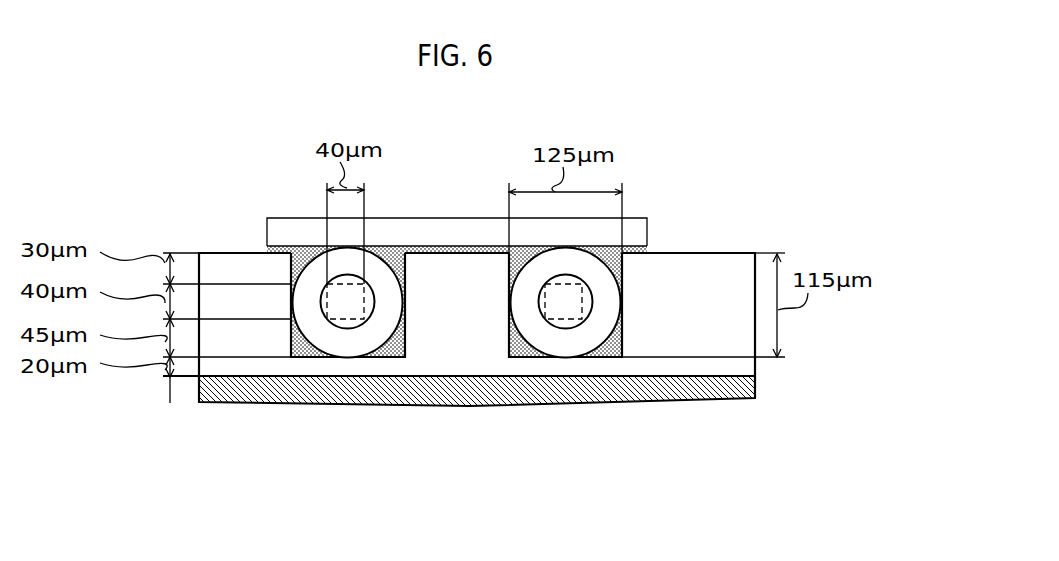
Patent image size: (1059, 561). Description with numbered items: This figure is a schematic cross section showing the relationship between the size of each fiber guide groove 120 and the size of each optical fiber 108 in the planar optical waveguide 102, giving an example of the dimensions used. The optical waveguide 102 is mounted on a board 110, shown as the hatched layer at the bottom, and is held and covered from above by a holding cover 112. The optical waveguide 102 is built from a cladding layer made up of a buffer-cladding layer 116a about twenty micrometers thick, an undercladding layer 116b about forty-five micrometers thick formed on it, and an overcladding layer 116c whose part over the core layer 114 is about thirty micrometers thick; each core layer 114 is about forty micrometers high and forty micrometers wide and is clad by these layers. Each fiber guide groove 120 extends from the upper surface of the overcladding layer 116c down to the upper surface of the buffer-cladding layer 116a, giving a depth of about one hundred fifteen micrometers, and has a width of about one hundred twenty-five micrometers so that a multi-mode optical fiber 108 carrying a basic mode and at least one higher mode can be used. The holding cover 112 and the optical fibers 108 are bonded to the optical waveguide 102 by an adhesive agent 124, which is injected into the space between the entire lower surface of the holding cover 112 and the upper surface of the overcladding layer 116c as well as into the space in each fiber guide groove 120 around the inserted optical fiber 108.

The planar optical waveguide 102 is at (711, 235).
The optical fiber 108 is at (369, 340).
The board 110 is at (467, 390).
The holding cover 112 is at (436, 227).
The core layer 114 is at (345, 312).
The buffer-cladding layer 116a is at (268, 368).
The undercladding layer 116b is at (240, 348).
The overcladding layer 116c is at (222, 268).
The fiber guide groove 120 is at (303, 253).
The adhesive agent 124 is at (468, 250).